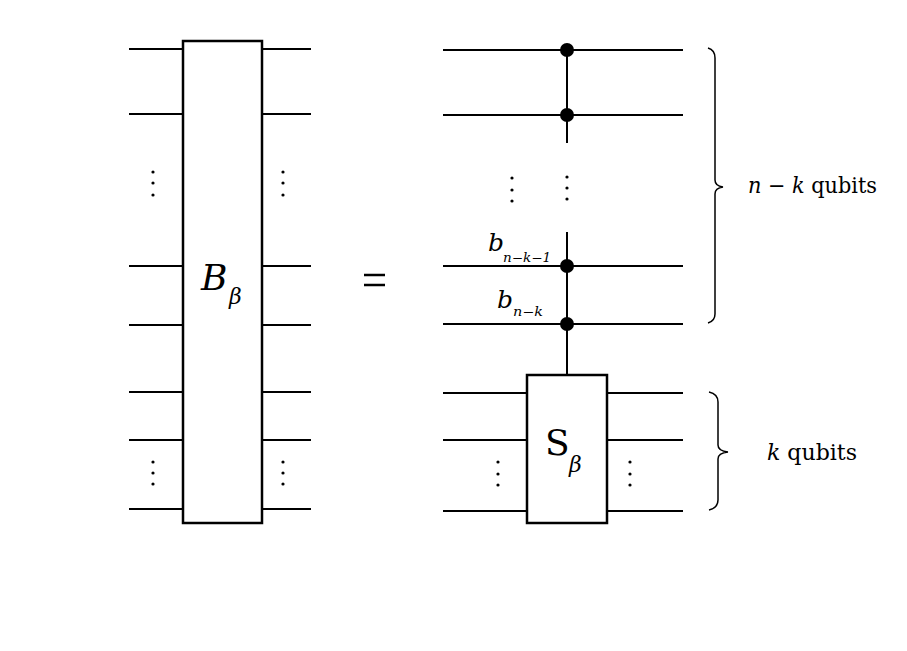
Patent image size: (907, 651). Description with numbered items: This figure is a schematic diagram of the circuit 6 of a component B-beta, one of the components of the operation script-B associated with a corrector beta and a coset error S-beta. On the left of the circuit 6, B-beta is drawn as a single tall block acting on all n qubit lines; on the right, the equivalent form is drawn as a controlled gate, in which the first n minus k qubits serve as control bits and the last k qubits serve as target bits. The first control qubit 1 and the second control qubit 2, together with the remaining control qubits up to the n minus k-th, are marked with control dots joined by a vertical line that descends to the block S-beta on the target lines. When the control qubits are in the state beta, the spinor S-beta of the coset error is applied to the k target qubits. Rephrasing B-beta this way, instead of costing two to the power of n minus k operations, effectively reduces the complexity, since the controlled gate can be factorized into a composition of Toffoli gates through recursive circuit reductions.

The first control qubit line b1 1 is at (563, 37).
The second control qubit line b2 2 is at (563, 101).
The figure 6 caption 6 is at (486, 592).